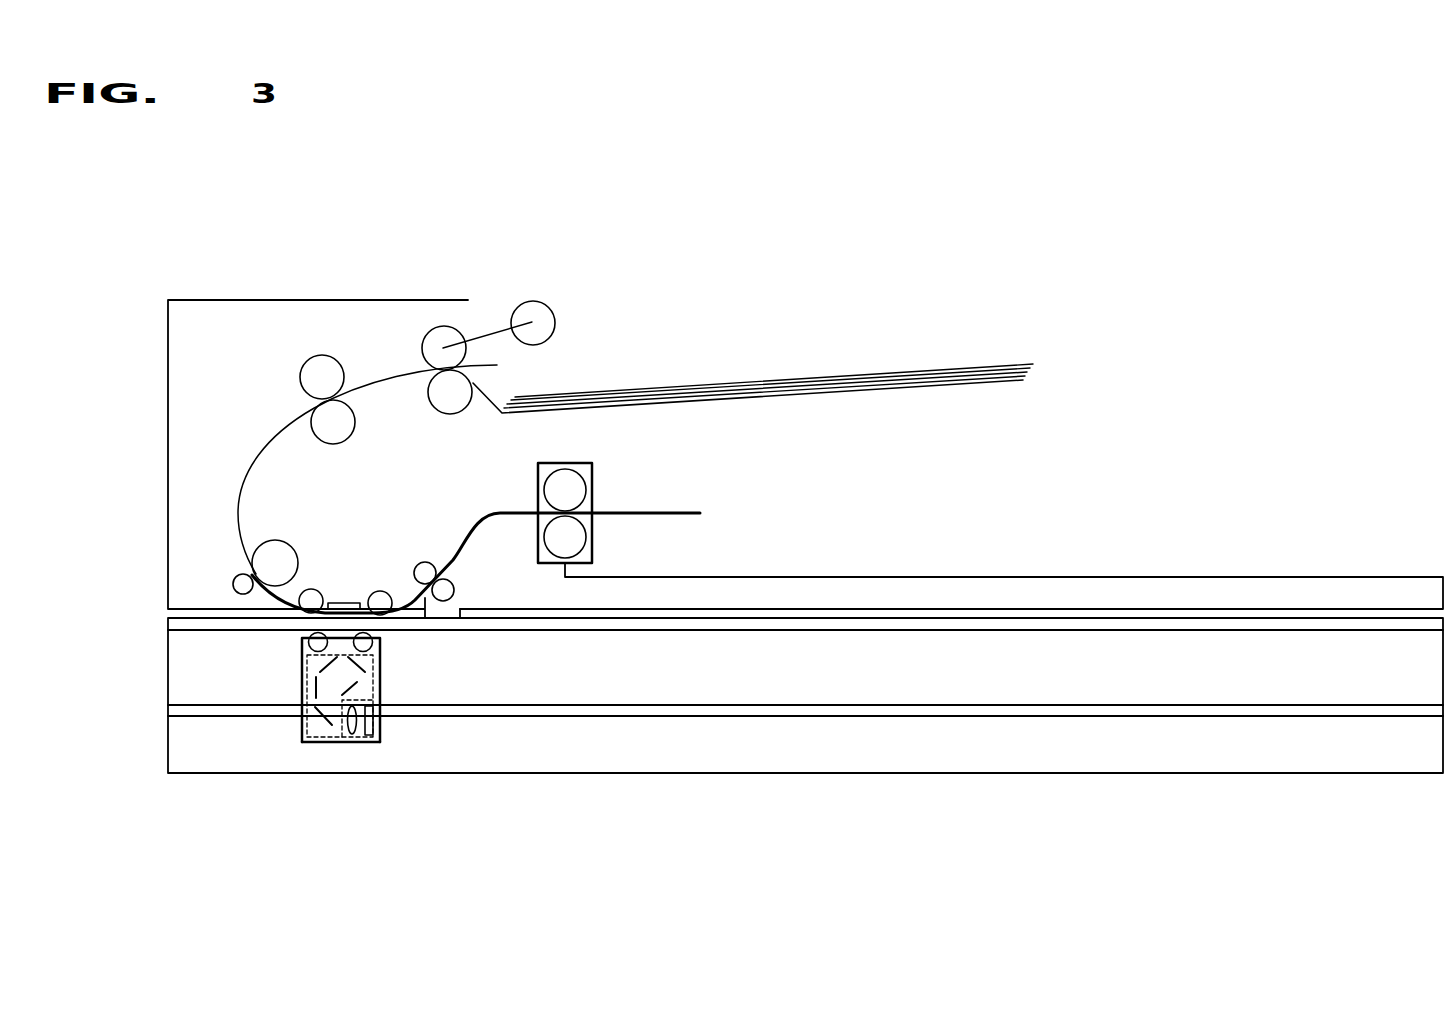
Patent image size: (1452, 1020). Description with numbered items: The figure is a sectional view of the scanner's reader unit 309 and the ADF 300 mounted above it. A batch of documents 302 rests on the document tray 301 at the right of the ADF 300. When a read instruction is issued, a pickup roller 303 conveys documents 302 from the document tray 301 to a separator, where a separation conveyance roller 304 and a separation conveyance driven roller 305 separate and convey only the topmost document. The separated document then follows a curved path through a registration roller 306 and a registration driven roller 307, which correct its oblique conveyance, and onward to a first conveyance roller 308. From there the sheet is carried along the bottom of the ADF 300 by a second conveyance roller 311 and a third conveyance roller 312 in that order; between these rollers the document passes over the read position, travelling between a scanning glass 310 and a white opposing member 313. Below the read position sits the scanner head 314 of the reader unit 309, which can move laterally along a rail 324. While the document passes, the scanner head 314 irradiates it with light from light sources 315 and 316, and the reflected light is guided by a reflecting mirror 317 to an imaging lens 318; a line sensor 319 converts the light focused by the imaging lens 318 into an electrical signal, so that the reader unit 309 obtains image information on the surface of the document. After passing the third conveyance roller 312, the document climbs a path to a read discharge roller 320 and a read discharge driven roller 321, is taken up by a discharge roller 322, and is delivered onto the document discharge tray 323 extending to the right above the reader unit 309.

The ADF 300 is at (213, 299).
The document tray 301 is at (712, 404).
The documents 302 is at (793, 378).
The pickup roller 303 is at (533, 300).
The separation conveyance roller 304 is at (422, 340).
The separation conveyance driven roller 305 is at (450, 414).
The registration roller 306 is at (345, 444).
The registration driven roller 307 is at (300, 380).
The first conveyance roller 308 is at (278, 541).
The reader unit 309 is at (167, 678).
The scanning glass 310 is at (213, 631).
The second conveyance roller 311 is at (311, 589).
The third conveyance roller 312 is at (385, 591).
The white opposing member 313 is at (350, 603).
The scanner head 314 is at (301, 732).
The light source 315 is at (307, 650).
The light source 316 is at (375, 645).
The reflecting mirror 317 is at (381, 682).
The imaging lens 318 is at (350, 741).
The line sensor 319 is at (381, 733).
The read discharge roller 320 is at (428, 562).
The read discharge driven roller 321 is at (455, 592).
The discharge roller 322 is at (593, 540).
The document discharge tray 323 is at (1158, 576).
The rail 324 is at (1068, 704).